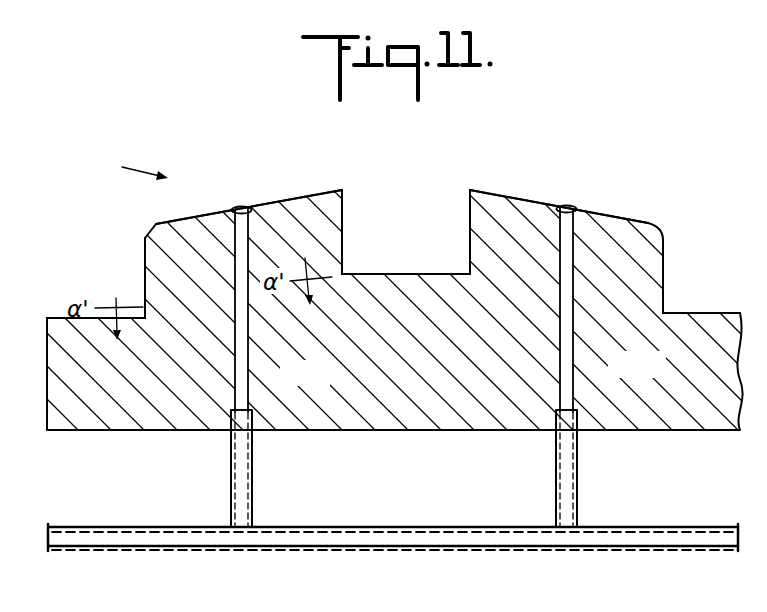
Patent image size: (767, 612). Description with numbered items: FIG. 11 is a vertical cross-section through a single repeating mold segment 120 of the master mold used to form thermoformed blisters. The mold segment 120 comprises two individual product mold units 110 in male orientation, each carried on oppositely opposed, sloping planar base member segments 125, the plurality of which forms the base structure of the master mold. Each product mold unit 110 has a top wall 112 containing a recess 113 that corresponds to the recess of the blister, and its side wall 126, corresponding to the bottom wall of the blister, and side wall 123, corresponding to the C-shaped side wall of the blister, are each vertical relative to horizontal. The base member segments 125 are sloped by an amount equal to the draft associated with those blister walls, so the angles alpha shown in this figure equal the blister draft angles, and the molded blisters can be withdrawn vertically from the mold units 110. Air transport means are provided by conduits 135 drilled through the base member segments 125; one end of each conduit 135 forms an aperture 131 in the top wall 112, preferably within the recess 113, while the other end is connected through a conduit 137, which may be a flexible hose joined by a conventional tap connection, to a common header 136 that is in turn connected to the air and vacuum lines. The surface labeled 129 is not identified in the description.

The individual product mold unit 110 is at (320, 189).
The top wall 112 is at (182, 217).
The recess 113 is at (255, 209).
The repeating mold segment 120 is at (135, 160).
The side wall 123 is at (143, 259).
The base member segment 125 is at (55, 317).
The side wall 126 is at (344, 219).
The root surface 129 is at (408, 272).
The aperture 131 is at (240, 207).
The conduit 135 is at (249, 377).
The header 136 is at (327, 552).
The conduit 137 is at (242, 477).